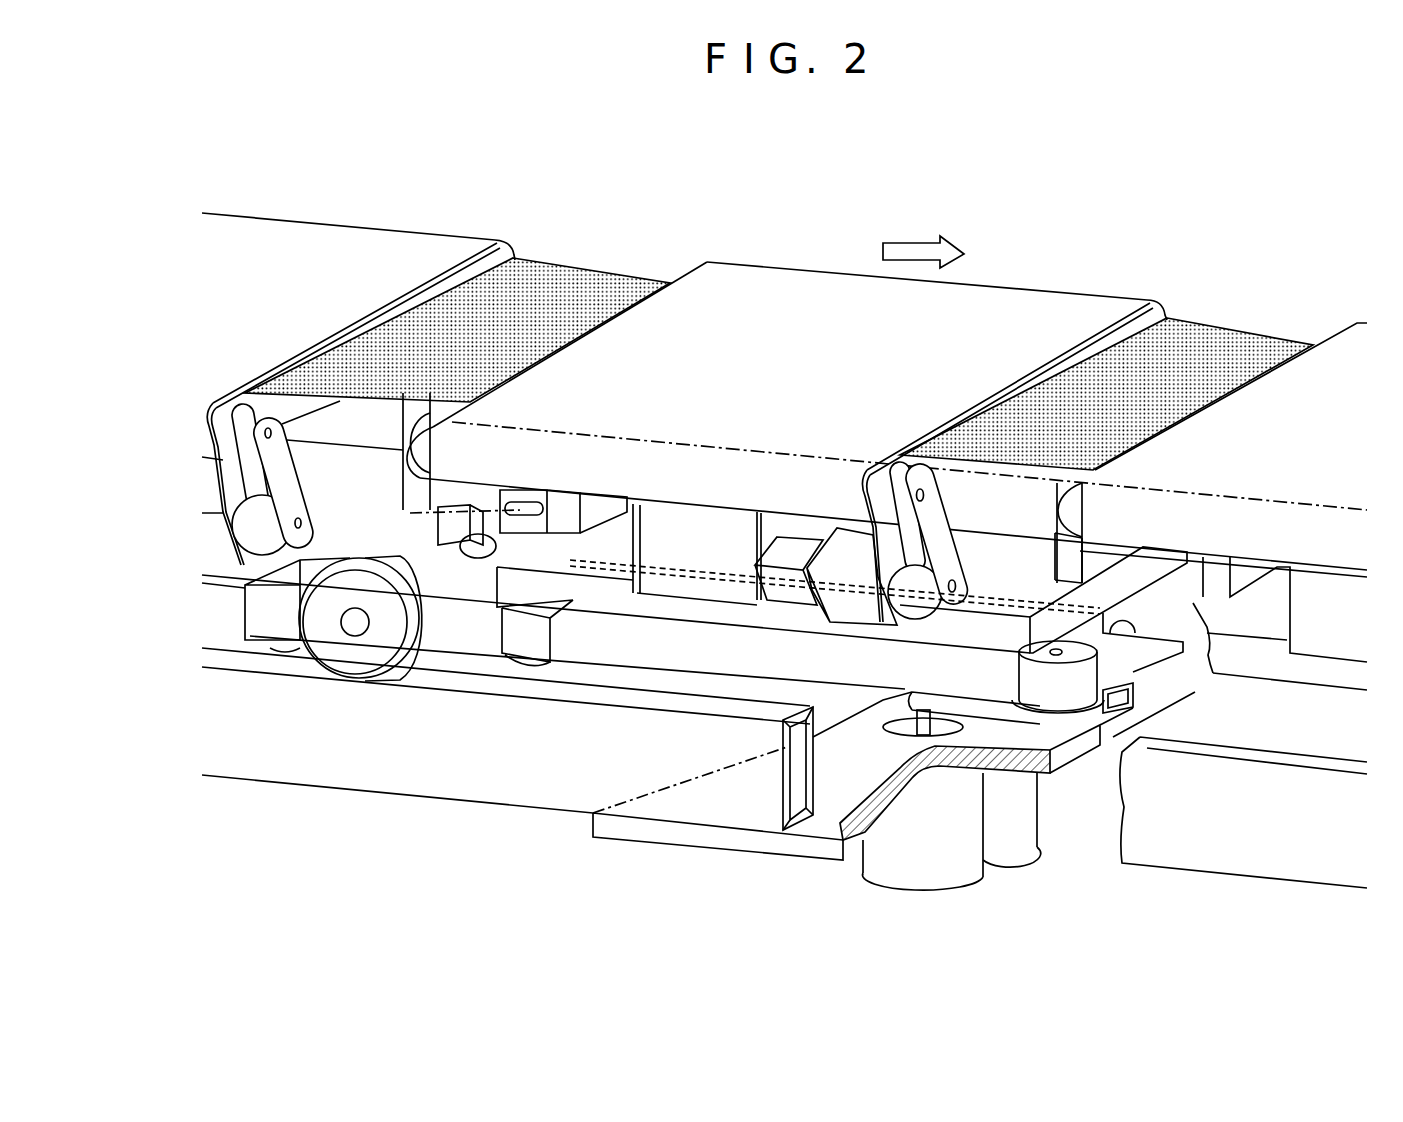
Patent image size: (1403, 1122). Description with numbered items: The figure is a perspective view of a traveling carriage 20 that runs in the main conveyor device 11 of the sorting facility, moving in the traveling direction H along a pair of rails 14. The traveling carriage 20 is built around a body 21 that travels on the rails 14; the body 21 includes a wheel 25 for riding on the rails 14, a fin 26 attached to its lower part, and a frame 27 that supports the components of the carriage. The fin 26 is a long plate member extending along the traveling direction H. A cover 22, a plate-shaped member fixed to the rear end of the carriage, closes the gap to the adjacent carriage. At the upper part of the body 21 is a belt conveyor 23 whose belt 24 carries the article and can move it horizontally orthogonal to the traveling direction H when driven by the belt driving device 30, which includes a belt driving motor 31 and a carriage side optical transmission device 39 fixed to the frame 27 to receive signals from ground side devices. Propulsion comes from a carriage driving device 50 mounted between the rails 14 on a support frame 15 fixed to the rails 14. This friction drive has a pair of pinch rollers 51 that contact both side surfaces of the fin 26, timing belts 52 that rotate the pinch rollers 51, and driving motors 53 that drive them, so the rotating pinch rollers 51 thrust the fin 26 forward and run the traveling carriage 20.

The main conveyor device 11 is at (255, 192).
The traveling carriage 20 is at (1064, 259).
The body 21 is at (699, 634).
The cover 22 is at (565, 278).
The belt conveyor 23 is at (768, 263).
The belt 24 is at (340, 240).
The wheel 25 is at (355, 655).
The fin 26 is at (1200, 672).
The frame 27 is at (617, 600).
The belt driving device 30 is at (790, 640).
The belt driving motor 31 is at (853, 600).
The carriage side optical transmission device 39 is at (458, 505).
The rails 14 is at (452, 780).
The support frame 15 is at (707, 833).
The carriage driving device 50 is at (1052, 850).
The pinch rollers 51 is at (1125, 628).
The timing belts 52 is at (905, 712).
The driving motors 53 is at (925, 880).
The traveling direction H is at (923, 219).